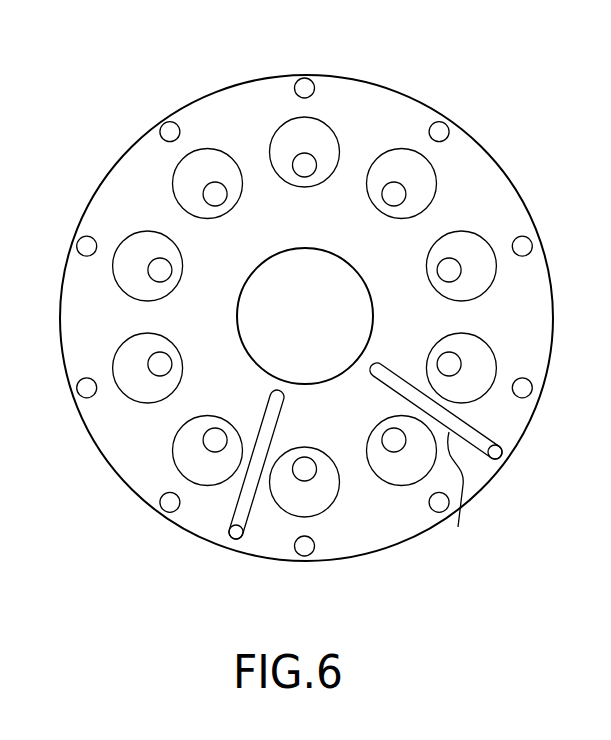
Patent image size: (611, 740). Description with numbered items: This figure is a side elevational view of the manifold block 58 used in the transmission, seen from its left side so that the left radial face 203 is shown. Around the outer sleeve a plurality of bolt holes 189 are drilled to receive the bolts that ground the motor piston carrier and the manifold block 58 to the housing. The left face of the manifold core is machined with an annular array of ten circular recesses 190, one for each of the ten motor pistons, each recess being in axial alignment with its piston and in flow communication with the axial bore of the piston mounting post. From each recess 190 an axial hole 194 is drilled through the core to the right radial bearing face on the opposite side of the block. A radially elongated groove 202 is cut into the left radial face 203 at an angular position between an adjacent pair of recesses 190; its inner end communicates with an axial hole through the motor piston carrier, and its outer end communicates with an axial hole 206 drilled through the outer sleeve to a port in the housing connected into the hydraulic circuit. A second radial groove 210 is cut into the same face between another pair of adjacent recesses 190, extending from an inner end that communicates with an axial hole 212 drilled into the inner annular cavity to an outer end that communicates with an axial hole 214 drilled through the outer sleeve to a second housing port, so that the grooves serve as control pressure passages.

The manifold block 58 is at (218, 554).
The bolt holes 189 is at (432, 128).
The circular recesses 190 is at (479, 242).
The axial hole 194 is at (448, 268).
The radially elongated groove 202 is at (243, 493).
The left radial face 203 is at (353, 427).
The axial hole 206 is at (237, 539).
The second radial groove 210 is at (470, 433).
The axial hole 212 is at (378, 366).
The axial hole 214 is at (503, 452).